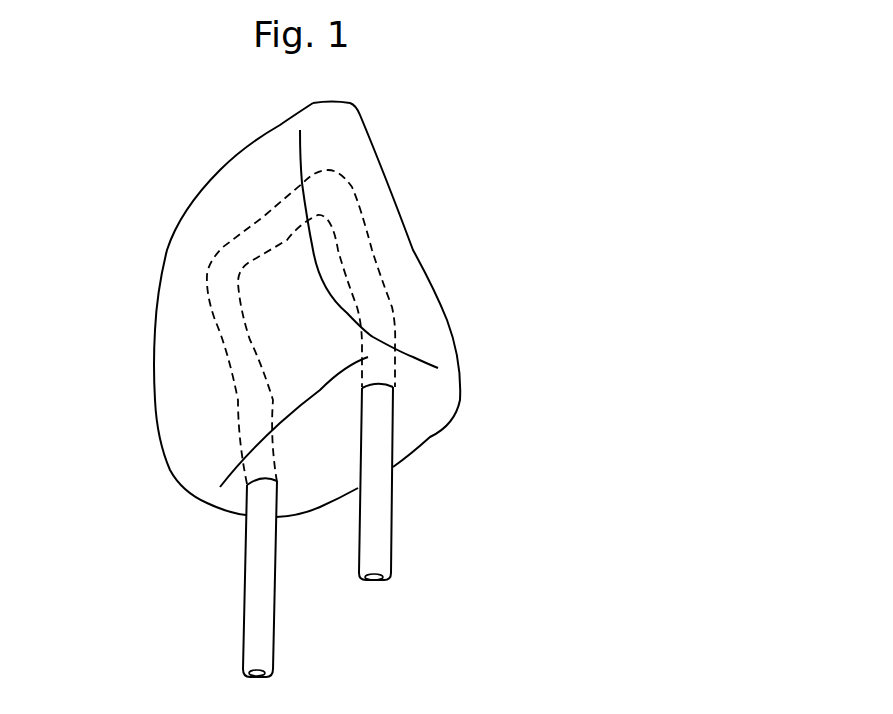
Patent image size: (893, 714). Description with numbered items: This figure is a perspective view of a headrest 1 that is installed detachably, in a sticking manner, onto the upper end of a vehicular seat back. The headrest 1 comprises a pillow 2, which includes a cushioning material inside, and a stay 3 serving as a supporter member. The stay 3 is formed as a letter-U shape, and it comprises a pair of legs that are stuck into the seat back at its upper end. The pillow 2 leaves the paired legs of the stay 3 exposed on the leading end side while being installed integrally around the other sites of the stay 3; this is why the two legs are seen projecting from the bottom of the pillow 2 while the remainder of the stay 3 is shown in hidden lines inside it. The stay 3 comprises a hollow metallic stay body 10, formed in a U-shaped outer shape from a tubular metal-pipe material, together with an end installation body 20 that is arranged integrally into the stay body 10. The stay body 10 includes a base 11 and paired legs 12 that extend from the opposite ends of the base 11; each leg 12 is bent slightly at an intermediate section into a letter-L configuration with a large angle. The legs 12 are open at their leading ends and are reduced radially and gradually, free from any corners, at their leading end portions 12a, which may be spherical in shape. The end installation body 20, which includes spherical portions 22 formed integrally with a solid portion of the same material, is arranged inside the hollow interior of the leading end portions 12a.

The headrest 1 is at (452, 146).
The pillow 2 is at (160, 260).
The stay 3 is at (400, 481).
The stay body 10 is at (392, 553).
The base 11 is at (263, 217).
The leg 12 is at (243, 573).
The leading end portion 12a is at (242, 675).
The end installation body 20 is at (316, 642).
The spherical portion 22 is at (257, 678).